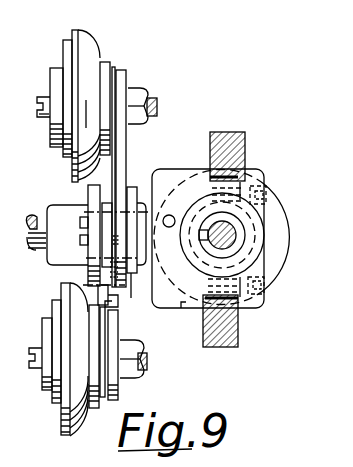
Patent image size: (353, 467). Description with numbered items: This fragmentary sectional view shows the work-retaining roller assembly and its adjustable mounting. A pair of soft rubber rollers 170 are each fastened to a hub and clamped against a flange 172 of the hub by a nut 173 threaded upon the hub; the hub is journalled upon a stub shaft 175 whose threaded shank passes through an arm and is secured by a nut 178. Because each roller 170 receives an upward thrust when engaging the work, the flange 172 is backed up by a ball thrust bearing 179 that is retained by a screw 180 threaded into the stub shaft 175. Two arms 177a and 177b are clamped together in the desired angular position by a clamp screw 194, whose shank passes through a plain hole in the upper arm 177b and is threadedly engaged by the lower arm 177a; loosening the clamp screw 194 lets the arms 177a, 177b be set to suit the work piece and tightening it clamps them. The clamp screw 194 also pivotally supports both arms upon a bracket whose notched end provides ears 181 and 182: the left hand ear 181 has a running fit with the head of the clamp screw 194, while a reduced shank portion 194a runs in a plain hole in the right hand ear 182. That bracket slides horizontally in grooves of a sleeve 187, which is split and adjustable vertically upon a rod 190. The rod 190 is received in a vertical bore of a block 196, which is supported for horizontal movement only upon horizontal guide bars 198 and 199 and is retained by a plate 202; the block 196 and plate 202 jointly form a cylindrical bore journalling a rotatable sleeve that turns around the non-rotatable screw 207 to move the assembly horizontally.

The soft rubber roller 170 is at (88, 45).
The flange 172 is at (64, 40).
The nut 173 is at (110, 61).
The stub shaft 175 is at (151, 101).
The lower arm 177a is at (124, 137).
The upper arm 177b is at (119, 390).
The nut 178 is at (138, 91).
The ball thrust bearing 179 is at (55, 70).
The screw 180 is at (47, 96).
The left hand ear 181 is at (80, 274).
The right hand ear 182 is at (133, 187).
The sleeve 187 is at (53, 255).
The rod 190 is at (42, 220).
The clamp screw 194 is at (80, 222).
The reduced shank portion 194a is at (131, 299).
The block 196 is at (184, 312).
The horizontal guide bar 198 is at (222, 132).
The horizontal guide bar 199 is at (215, 346).
The plate 202 is at (252, 304).
The screw 207 is at (208, 222).